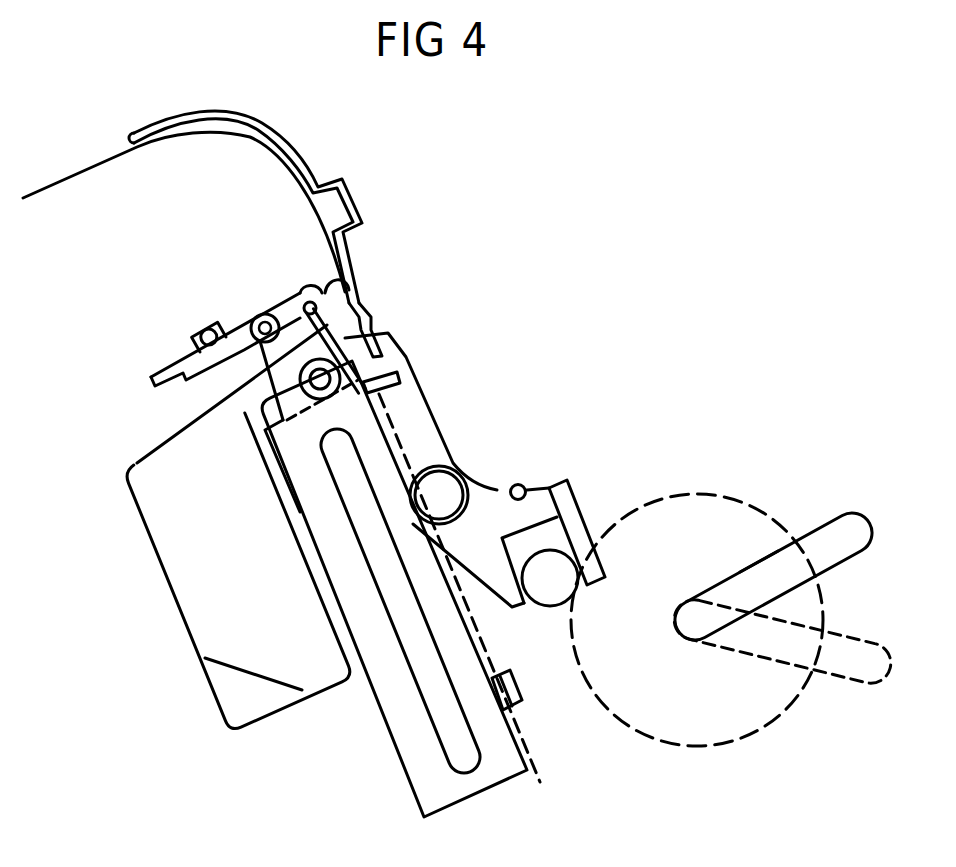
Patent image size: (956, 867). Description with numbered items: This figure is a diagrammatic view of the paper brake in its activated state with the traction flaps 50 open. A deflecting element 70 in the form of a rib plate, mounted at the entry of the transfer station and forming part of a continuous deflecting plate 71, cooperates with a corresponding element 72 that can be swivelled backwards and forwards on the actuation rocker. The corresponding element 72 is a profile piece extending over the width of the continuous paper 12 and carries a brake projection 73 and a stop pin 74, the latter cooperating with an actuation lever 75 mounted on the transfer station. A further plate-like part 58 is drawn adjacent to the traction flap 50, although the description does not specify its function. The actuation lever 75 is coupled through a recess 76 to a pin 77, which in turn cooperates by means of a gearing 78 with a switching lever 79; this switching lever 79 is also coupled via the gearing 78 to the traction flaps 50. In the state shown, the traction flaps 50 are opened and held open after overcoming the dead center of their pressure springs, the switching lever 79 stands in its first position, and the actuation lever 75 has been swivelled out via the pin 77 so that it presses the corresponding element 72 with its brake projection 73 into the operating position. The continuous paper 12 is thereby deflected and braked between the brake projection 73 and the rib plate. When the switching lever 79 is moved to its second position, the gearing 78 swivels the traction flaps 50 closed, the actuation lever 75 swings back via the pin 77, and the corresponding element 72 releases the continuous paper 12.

The continuous paper 12 is at (110, 167).
The traction flaps 50 is at (480, 786).
The plate 58 is at (223, 690).
The deflecting element 70 is at (353, 282).
The deflecting plate 71 is at (283, 140).
The corresponding element 72 is at (260, 306).
The brake projection 73 is at (366, 308).
The stop pin 74 is at (323, 414).
The actuation lever 75 is at (423, 423).
The recess 76 is at (548, 537).
The pin 77 is at (552, 592).
The gearing 78 is at (692, 505).
The switching lever 79 is at (850, 577).